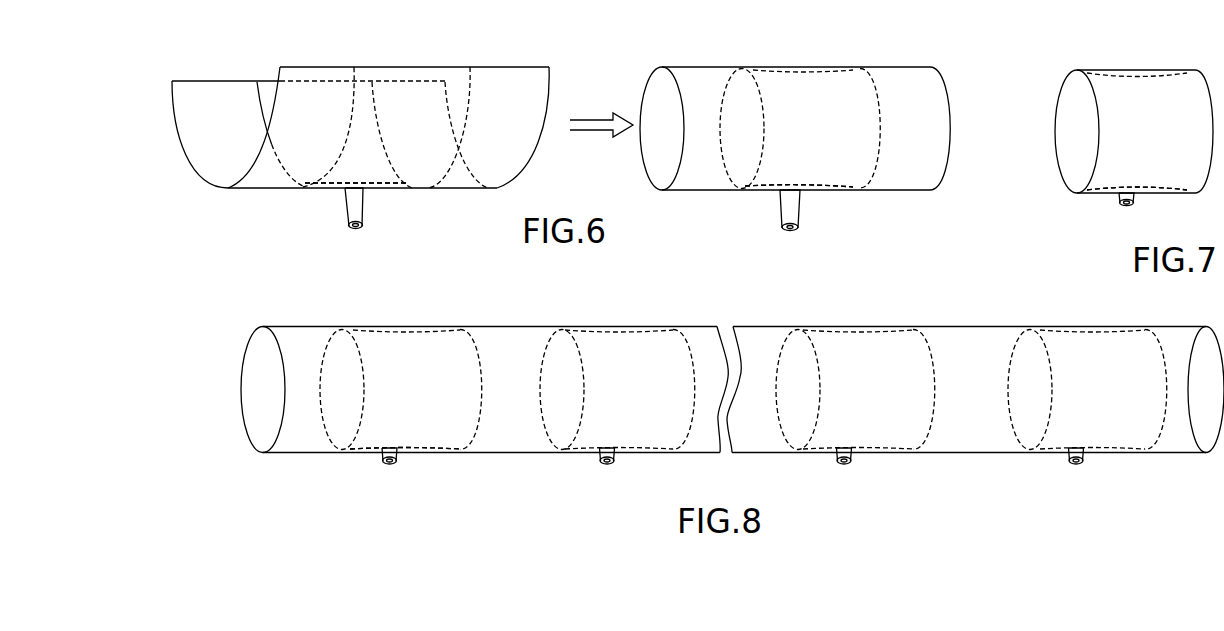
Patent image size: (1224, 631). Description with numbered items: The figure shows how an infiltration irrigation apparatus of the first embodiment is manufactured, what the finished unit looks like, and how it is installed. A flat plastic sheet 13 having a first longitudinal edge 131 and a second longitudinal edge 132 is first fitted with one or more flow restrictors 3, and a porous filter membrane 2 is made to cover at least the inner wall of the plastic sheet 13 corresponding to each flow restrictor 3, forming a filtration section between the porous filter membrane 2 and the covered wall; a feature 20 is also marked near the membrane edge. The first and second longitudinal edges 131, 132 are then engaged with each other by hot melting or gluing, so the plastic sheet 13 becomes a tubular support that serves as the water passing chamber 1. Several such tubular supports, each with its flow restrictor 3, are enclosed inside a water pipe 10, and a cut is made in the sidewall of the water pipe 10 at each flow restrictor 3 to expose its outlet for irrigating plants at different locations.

In FIG. 6, the water passing chamber 1 is at (662, 102).
In FIG. 7, the water passing chamber 1 is at (1072, 100).
In FIG. 8, the water passing chamber 1 is at (340, 357).
In FIG. 6, the porous filter membrane 2 is at (271, 93).
In FIG. 7, the porous filter membrane 2 is at (1128, 100).
In FIG. 8, the porous filter membrane 2 is at (400, 350).
In FIG. 6, the flow restrictor 3 is at (355, 202).
In FIG. 7, the flow restrictor 3 is at (1125, 203).
In FIG. 8, the flow restrictor 3 is at (380, 460).
In FIG. 8, the water pipe 10 is at (732, 359).
In FIG. 6, the plastic sheet 13 is at (405, 65).
In FIG. 6, the bottom edge of inner element 20 is at (390, 188).
In FIG. 7, the bottom edge of inner element 20 is at (1152, 190).
In FIG. 8, the bottom edge of inner element 20 is at (427, 452).
In FIG. 6, the first longitudinal edge 131 is at (505, 73).
In FIG. 6, the second longitudinal edge 132 is at (230, 81).